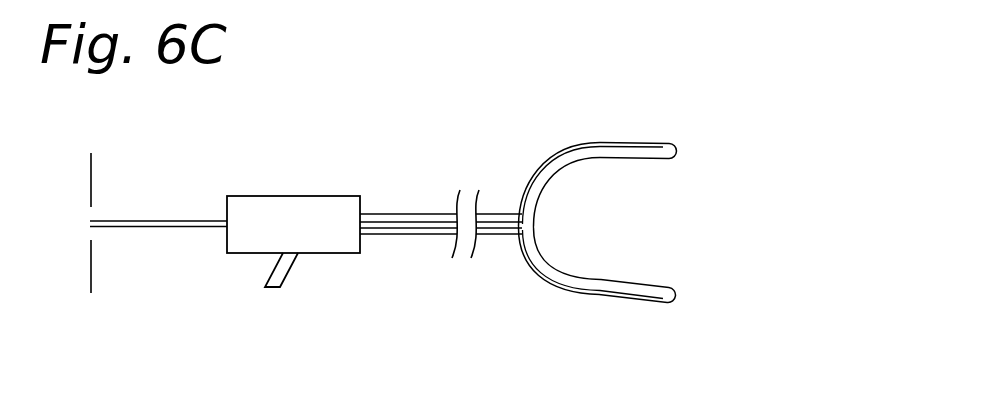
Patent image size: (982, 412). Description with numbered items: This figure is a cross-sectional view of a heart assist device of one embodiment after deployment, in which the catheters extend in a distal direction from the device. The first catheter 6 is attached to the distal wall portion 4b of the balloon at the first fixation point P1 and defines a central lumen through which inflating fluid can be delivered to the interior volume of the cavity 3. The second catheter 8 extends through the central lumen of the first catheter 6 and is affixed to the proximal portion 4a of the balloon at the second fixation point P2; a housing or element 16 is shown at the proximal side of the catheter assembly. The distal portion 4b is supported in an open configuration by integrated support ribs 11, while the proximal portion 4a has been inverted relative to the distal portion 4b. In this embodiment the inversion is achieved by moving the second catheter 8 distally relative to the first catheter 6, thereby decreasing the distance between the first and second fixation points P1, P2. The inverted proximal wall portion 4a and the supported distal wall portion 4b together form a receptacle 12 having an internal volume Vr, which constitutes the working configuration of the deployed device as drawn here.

The cavity 3 is at (570, 284).
The proximal portion 4a is at (655, 160).
The distal portion 4b is at (651, 145).
The first catheter 6 is at (400, 213).
The second catheter 8 is at (160, 218).
The integrated support ribs 11 is at (581, 148).
The receptacle 12 is at (663, 314).
The connector housing 16 is at (293, 196).
The first fixation point P1 is at (512, 235).
The second fixation point P2 is at (532, 225).
The internal volume Vr is at (650, 260).